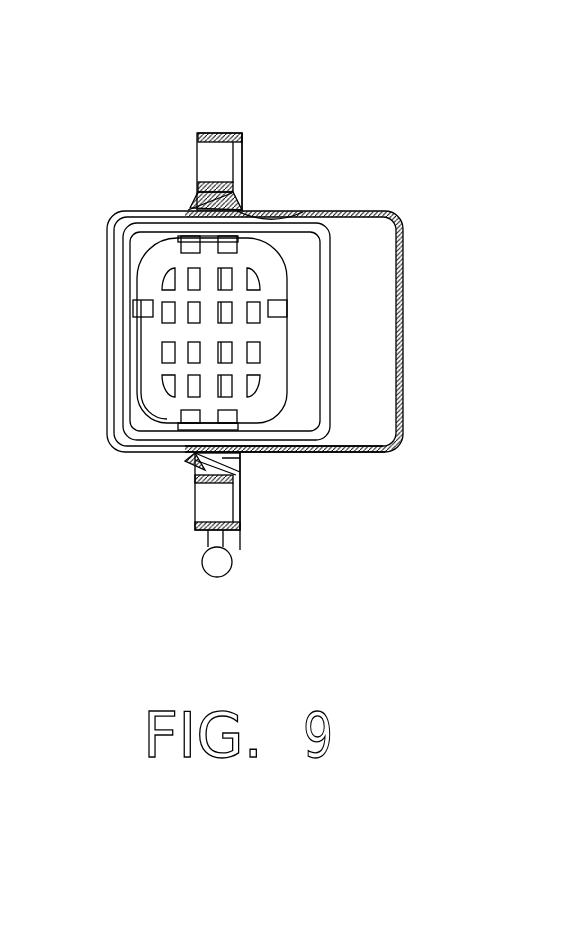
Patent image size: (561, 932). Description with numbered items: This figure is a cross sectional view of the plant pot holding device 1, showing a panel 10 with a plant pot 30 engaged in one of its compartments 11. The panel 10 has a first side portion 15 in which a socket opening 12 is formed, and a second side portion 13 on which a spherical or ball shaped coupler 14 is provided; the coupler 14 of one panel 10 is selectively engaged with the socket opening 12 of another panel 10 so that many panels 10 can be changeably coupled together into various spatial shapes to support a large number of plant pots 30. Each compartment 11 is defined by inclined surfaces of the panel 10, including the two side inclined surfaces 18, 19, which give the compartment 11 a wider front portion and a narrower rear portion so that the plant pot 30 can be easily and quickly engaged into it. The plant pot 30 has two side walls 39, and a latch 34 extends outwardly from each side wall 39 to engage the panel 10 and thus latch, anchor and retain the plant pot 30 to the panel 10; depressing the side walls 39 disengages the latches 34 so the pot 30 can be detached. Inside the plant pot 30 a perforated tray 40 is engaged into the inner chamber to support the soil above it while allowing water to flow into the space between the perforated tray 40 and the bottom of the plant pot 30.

The connector 1 is at (342, 108).
The panel 10 is at (258, 130).
The compartment 11 is at (237, 207).
The socket opening 12 is at (205, 152).
The second side portion 13 is at (224, 110).
The coupler 14 is at (208, 562).
The first side portion 15 is at (256, 536).
The side inclined surface 18 is at (245, 460).
The side inclined surface 19 is at (313, 212).
The plant pot 30 is at (378, 335).
The latch 34 is at (195, 453).
The side wall 39 is at (368, 458).
The perforated tray 40 is at (140, 392).